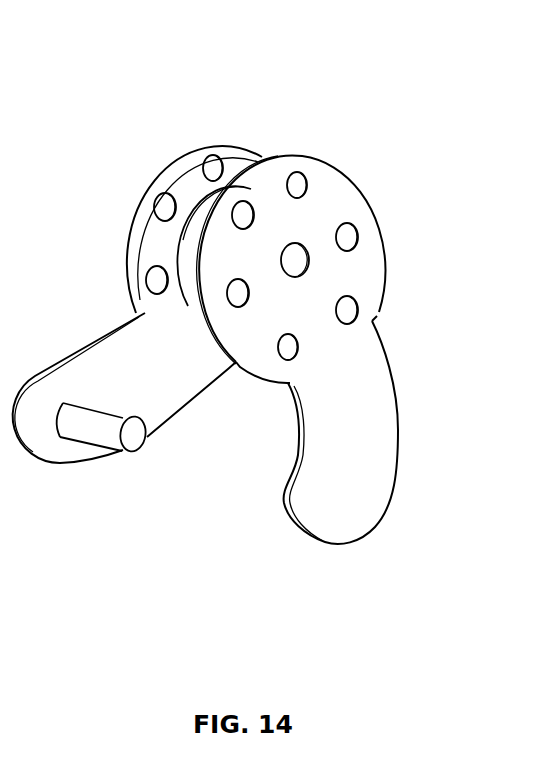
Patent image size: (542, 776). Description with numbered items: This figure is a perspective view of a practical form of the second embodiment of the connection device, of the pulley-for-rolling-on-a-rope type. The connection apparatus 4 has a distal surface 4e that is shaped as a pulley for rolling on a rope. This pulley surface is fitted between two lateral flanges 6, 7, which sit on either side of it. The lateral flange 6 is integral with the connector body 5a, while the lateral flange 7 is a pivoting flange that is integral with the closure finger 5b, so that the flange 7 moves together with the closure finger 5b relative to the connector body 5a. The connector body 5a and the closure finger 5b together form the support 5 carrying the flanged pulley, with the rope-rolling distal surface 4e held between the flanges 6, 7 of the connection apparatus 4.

The connection apparatus 4 is at (234, 210).
The distal surface 4e is at (197, 212).
The support member 5 is at (236, 436).
The connector body 5a is at (67, 388).
The closure finger 5b is at (385, 449).
The lateral flange 6 is at (145, 225).
The lateral flange 7 is at (289, 164).